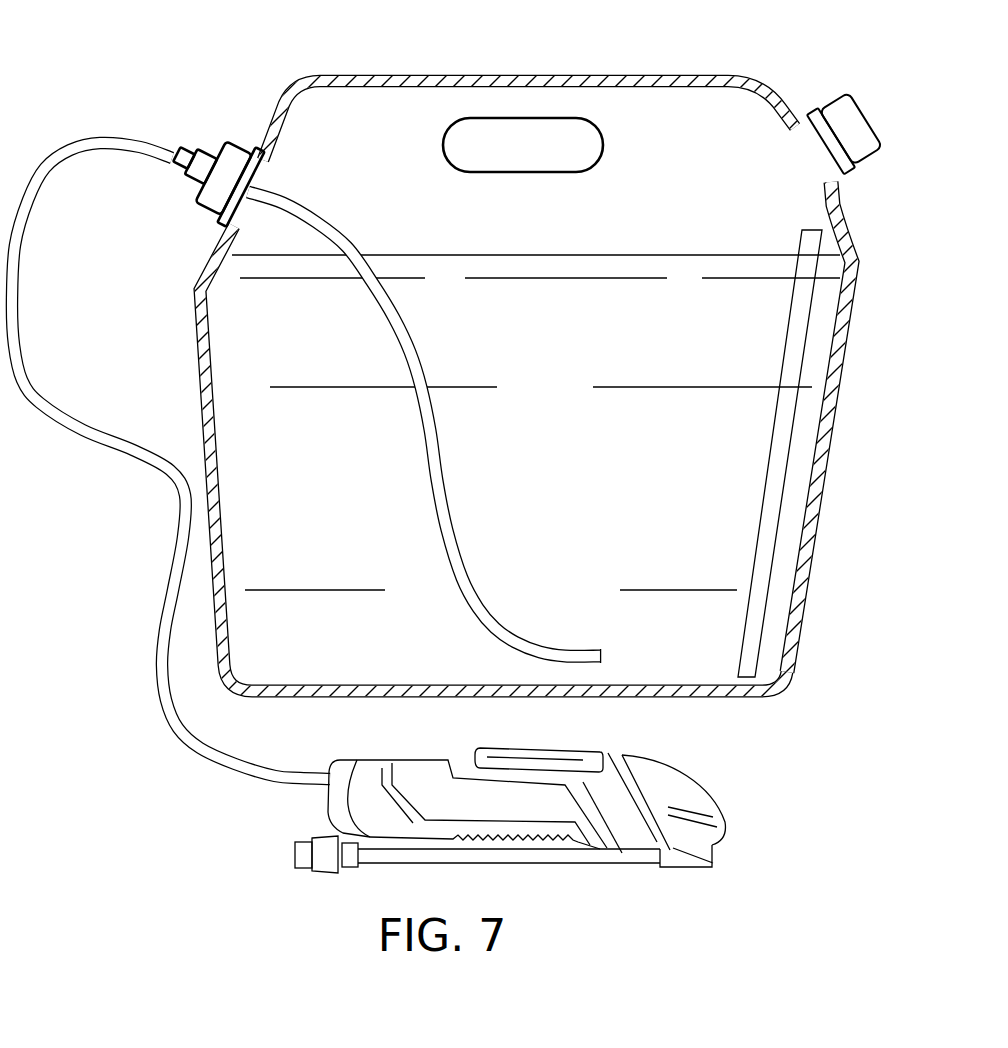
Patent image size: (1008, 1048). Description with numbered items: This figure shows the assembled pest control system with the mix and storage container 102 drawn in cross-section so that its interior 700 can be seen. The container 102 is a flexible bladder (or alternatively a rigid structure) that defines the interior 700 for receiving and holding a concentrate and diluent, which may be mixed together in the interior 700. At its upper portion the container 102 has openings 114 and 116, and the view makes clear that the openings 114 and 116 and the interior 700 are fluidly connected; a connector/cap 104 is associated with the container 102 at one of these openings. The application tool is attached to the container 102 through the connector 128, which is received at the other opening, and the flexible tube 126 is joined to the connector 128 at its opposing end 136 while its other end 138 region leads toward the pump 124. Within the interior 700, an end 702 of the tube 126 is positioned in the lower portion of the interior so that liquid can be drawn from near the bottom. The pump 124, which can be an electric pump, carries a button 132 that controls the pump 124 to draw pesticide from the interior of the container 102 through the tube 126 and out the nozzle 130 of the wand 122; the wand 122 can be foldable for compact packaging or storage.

The mix and storage container 102 is at (656, 73).
The connector/cap 104 is at (865, 127).
The opening 114 is at (264, 168).
The opening 116 is at (799, 140).
The wand 122 is at (517, 813).
The pump 124 is at (718, 797).
The flexible tube 126 is at (92, 442).
The connector 128 is at (231, 140).
The nozzle 130 is at (325, 866).
The button 132 is at (533, 760).
The opposing end of the tube 136 is at (307, 770).
The hose end 138 is at (142, 143).
The interior 700 is at (720, 472).
The end of the tube 702 is at (592, 645).